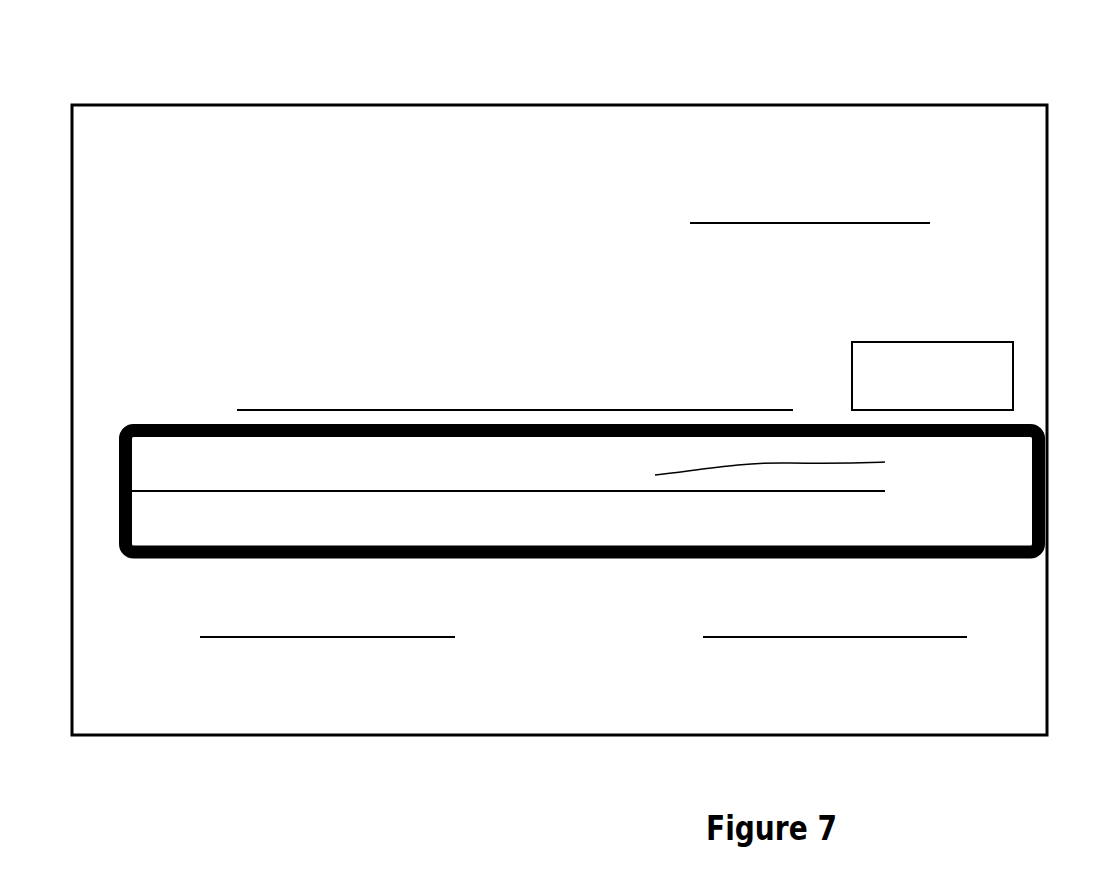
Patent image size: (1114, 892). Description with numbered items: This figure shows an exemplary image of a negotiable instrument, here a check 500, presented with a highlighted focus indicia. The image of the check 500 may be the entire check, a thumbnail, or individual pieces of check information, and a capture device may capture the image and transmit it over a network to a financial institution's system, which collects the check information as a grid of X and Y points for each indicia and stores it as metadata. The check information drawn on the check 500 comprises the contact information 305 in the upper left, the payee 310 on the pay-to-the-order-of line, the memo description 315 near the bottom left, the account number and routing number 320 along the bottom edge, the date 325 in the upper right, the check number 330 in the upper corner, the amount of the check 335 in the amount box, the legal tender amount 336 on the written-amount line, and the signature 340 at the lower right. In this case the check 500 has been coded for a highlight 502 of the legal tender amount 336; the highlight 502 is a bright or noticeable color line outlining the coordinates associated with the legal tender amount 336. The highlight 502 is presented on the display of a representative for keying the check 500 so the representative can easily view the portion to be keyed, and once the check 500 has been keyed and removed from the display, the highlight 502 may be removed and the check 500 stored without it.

The check 500 is at (583, 117).
The contact information 305 is at (113, 133).
The payee 310 is at (115, 345).
The date 325 is at (623, 167).
The check number 330 is at (1013, 130).
The amount of the check 335 is at (1015, 330).
The legal tender amount 336 is at (1015, 442).
The highlight 502 is at (113, 435).
The memo description 315 is at (108, 587).
The signature 340 is at (965, 572).
The account number and routing number 320 is at (613, 735).